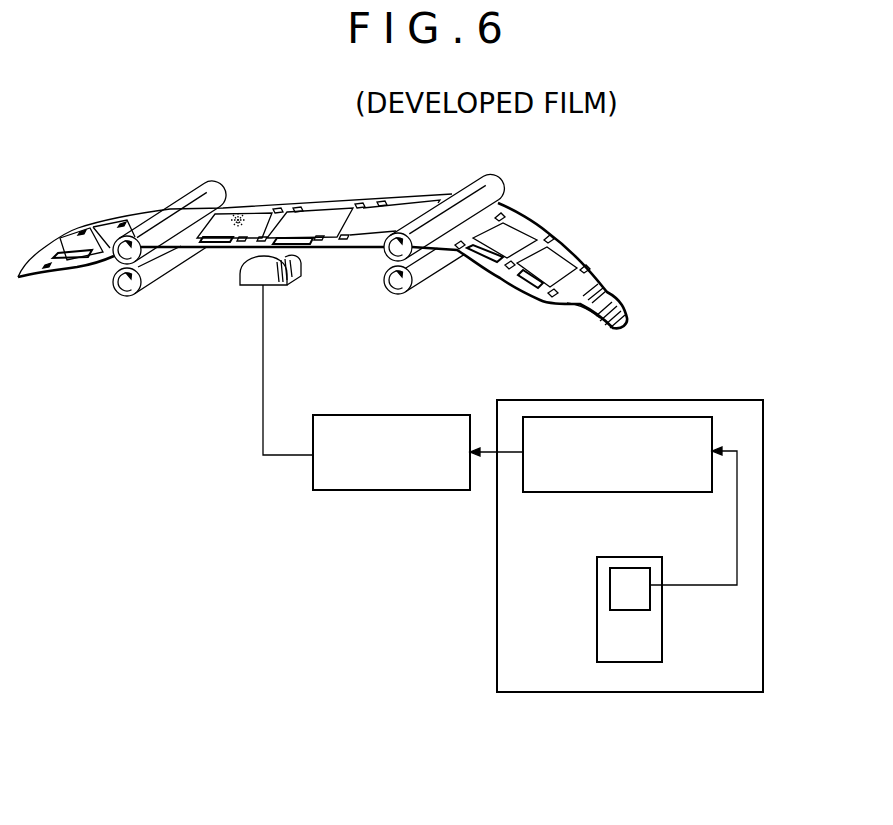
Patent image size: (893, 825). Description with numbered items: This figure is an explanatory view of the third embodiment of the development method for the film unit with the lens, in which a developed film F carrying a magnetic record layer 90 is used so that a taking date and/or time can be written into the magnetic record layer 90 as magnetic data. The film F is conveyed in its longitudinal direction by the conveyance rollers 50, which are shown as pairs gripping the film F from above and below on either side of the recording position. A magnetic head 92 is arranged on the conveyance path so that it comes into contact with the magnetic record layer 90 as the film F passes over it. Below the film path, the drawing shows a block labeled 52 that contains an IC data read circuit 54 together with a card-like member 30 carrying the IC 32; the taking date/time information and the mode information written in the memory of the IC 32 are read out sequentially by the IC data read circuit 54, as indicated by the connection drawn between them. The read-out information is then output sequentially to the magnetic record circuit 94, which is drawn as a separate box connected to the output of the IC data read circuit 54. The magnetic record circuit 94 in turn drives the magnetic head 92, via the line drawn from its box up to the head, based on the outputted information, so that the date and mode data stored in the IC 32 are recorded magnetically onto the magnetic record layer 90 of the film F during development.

The film F is at (370, 196).
The conveyance rollers 50 is at (177, 212).
The magnetic record layer 90 is at (262, 248).
The magnetic head 92 is at (296, 280).
The magnetic record circuit 94 is at (370, 490).
The IC card reader unit 52 is at (764, 464).
The IC data read circuit 54 is at (543, 493).
The IC card 30 is at (597, 583).
The IC 32 is at (610, 592).